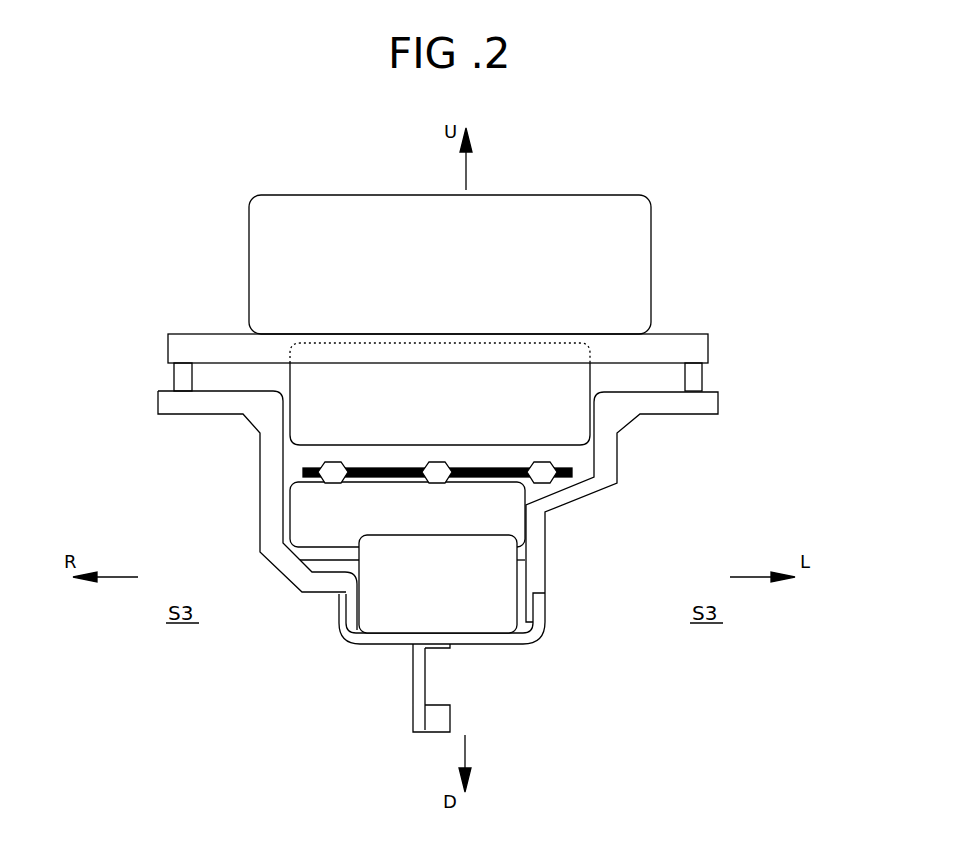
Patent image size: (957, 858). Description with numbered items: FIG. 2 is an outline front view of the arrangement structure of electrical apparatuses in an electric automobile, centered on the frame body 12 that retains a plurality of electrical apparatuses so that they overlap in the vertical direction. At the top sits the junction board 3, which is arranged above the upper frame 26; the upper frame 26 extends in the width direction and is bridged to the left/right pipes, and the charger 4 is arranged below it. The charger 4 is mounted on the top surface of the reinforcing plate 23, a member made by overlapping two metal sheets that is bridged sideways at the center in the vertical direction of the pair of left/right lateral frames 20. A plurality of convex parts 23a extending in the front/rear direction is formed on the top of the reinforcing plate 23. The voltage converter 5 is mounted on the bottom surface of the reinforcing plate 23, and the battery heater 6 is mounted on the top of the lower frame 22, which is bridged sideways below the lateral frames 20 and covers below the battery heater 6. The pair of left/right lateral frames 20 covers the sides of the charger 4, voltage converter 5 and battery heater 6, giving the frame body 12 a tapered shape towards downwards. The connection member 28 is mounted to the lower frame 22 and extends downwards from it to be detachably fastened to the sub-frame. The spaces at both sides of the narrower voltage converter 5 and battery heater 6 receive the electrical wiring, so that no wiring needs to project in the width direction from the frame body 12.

The junction board 3 is at (482, 281).
The charger 4 is at (480, 407).
The voltage converter 5 is at (480, 522).
The battery heater 6 is at (480, 597).
The frame body 12 is at (800, 330).
The lateral frames 20 is at (260, 544).
The lower frame 22 is at (503, 643).
The reinforcing plate 23 is at (303, 466).
The convex parts 23a is at (428, 462).
The upper frame 26 is at (663, 335).
The connection member 28 is at (413, 680).